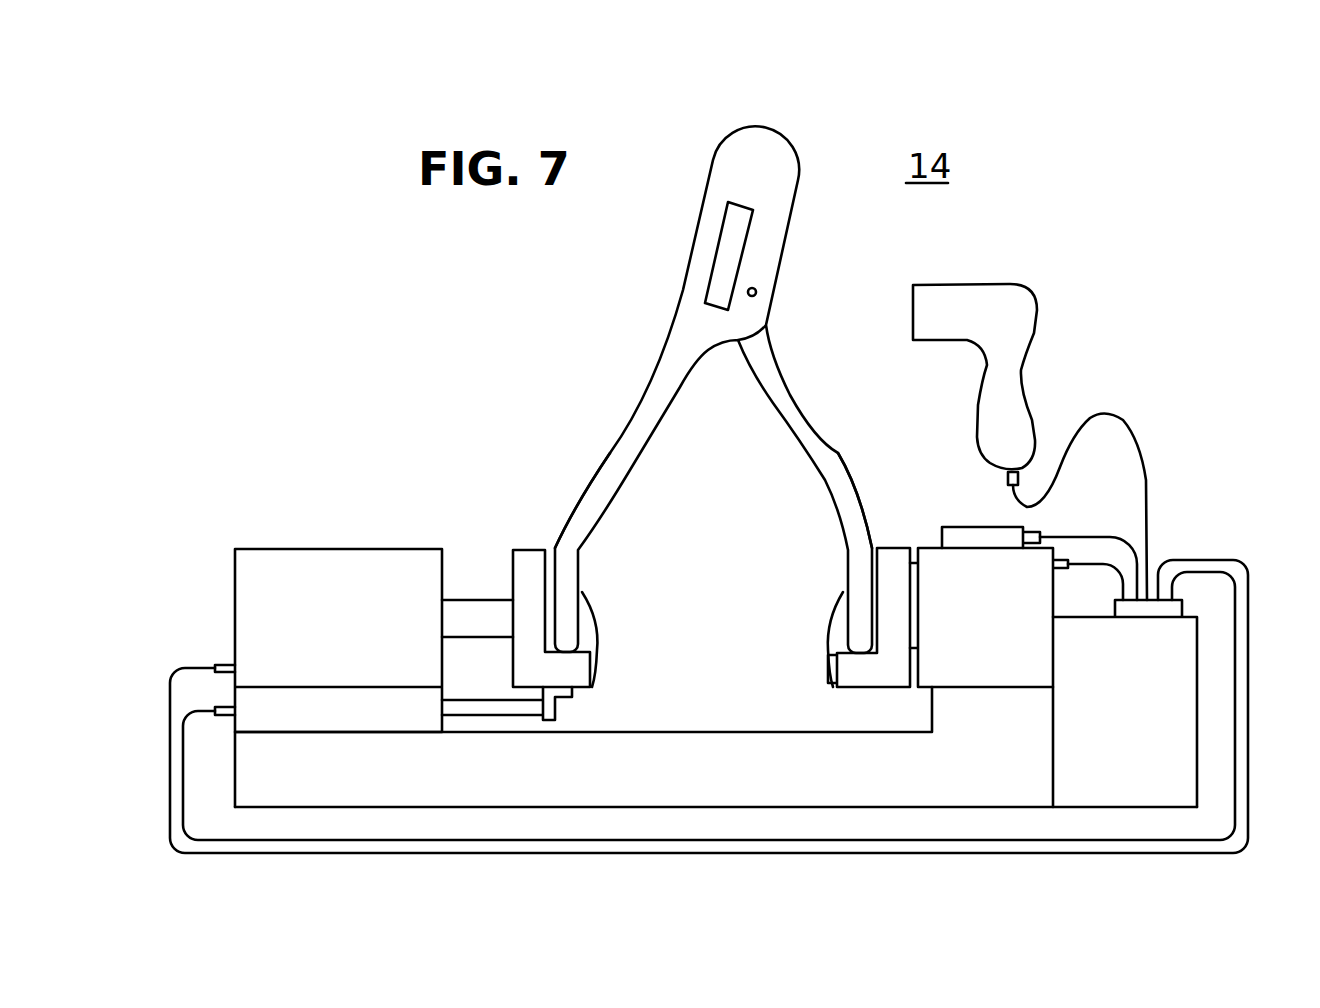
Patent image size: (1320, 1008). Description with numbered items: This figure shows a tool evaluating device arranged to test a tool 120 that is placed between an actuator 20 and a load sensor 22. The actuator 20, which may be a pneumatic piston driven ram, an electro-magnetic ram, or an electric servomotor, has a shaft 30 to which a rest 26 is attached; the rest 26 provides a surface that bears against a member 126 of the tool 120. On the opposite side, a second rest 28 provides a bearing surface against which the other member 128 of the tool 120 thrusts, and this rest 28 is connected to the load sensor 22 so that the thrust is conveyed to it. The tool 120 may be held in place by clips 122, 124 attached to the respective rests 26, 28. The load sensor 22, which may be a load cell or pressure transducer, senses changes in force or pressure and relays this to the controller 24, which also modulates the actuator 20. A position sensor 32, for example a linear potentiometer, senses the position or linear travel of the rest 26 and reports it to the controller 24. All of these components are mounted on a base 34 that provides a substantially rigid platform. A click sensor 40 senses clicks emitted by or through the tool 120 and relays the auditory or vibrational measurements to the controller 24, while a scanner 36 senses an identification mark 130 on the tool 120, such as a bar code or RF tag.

The actuator 20 is at (277, 548).
The load sensor 22 is at (935, 547).
The controller 24 is at (1135, 807).
The rest 26 is at (583, 690).
The rest 28 is at (872, 690).
The shaft 30 is at (462, 598).
The position sensor 32 is at (236, 727).
The base 34 is at (735, 732).
The scanning device 36 is at (1022, 285).
The click sensor 40 is at (983, 527).
The tool 120 is at (707, 186).
The clip 122 is at (600, 633).
The clip 124 is at (840, 608).
The member 126 is at (597, 472).
The member 128 is at (825, 442).
The identification mark 130 is at (750, 228).